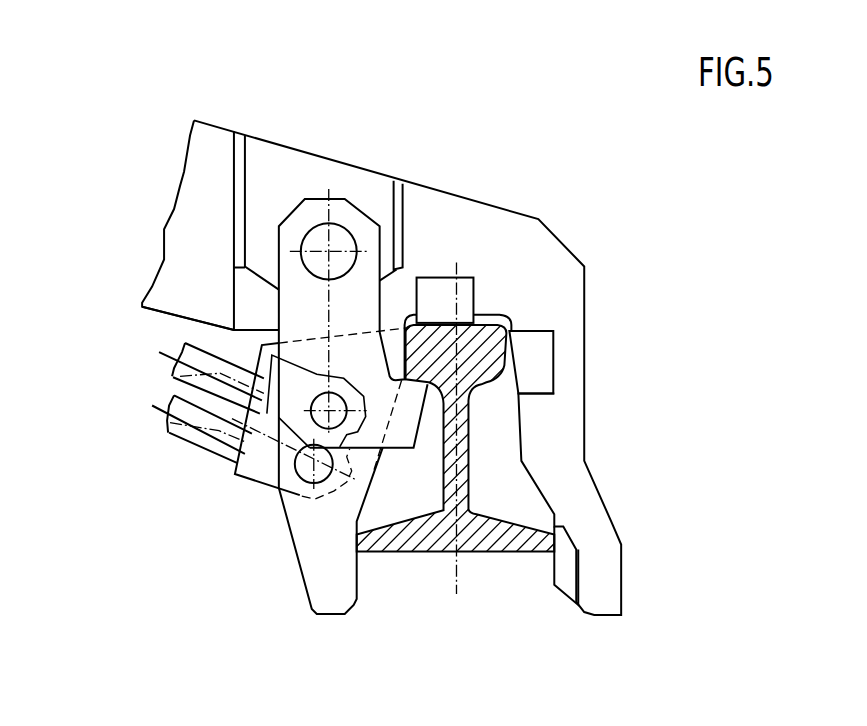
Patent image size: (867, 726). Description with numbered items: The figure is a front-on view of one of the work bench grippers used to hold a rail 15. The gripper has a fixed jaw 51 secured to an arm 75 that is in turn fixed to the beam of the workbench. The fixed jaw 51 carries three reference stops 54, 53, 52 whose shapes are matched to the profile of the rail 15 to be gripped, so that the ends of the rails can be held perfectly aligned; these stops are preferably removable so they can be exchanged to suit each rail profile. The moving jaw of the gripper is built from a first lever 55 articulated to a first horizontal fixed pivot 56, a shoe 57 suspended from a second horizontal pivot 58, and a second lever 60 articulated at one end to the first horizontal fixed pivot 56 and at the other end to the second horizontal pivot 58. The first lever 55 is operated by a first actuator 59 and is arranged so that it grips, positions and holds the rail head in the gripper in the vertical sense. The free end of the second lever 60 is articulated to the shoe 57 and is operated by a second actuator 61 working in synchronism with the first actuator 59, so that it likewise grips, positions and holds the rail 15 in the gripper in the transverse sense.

The rail 15 is at (470, 443).
The fixed jaw 51 is at (547, 445).
The reference stop 52 is at (567, 568).
The reference stop 53 is at (532, 352).
The reference stop 54 is at (433, 302).
The first lever 55 is at (297, 320).
The first horizontal fixed pivot 56 is at (332, 240).
The shoe 57 is at (317, 562).
The second horizontal pivot 58 is at (302, 470).
The first actuator 59 is at (178, 375).
The lever arm 60 is at (408, 423).
The second actuator 61 is at (183, 430).
The arm 75 is at (212, 170).